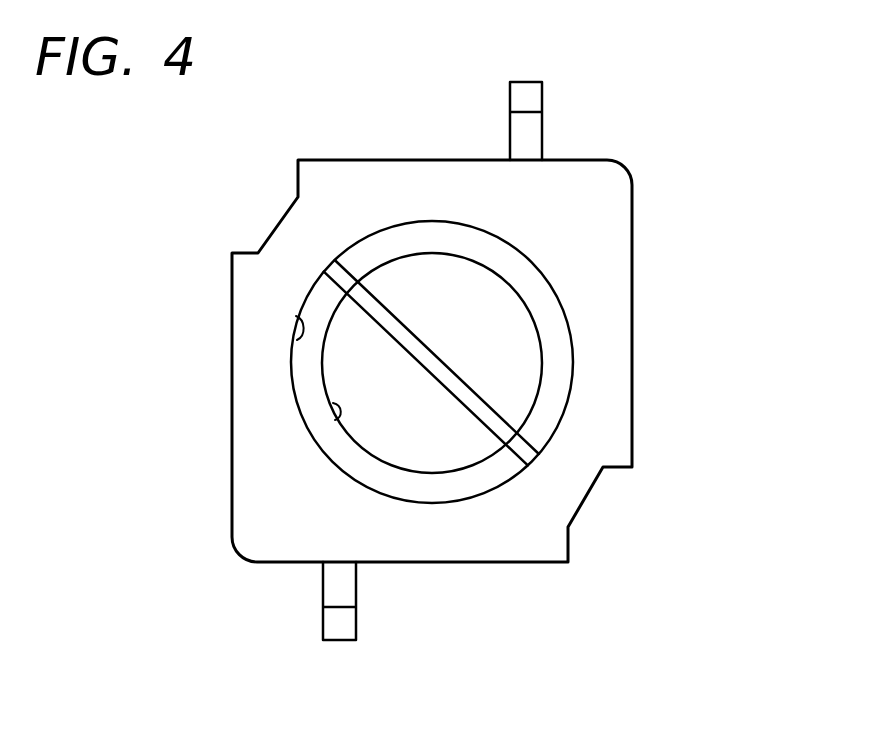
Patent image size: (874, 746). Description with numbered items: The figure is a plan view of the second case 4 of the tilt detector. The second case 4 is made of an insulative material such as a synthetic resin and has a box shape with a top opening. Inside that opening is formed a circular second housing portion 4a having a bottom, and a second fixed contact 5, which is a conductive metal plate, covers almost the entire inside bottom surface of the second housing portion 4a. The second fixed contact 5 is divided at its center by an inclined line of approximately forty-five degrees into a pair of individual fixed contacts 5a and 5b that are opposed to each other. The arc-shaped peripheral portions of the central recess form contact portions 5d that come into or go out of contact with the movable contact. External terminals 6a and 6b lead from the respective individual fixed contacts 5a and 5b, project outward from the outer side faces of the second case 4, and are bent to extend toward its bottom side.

The second case 4 is at (338, 155).
The second housing portion 4a is at (300, 327).
The second fixed contact 5 is at (448, 362).
The individual fixed contact 5a is at (468, 450).
The individual fixed contact 5b is at (520, 392).
The contact portions 5d is at (333, 405).
The external terminal 6a is at (342, 628).
The external terminal 6b is at (527, 100).